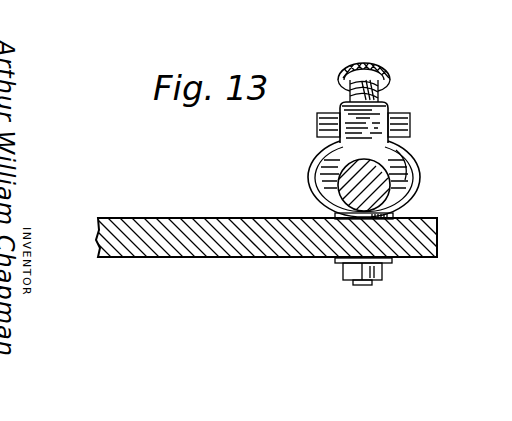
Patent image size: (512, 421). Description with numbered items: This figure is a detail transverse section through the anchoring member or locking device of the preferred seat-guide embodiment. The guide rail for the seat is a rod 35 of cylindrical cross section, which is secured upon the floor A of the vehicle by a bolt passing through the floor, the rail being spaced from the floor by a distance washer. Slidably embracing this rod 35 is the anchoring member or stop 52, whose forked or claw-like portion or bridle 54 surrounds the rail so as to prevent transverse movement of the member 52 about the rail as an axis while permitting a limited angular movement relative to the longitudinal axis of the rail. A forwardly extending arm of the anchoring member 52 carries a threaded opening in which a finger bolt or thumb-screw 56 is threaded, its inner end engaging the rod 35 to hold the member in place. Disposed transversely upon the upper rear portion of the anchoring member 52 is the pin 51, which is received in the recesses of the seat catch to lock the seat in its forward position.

The thumb-screw 56 is at (392, 40).
The pin 51 is at (326, 112).
The anchoring member 52 is at (423, 157).
The bridle 54 is at (405, 180).
The rod 35 is at (341, 174).
The floor A is at (235, 257).